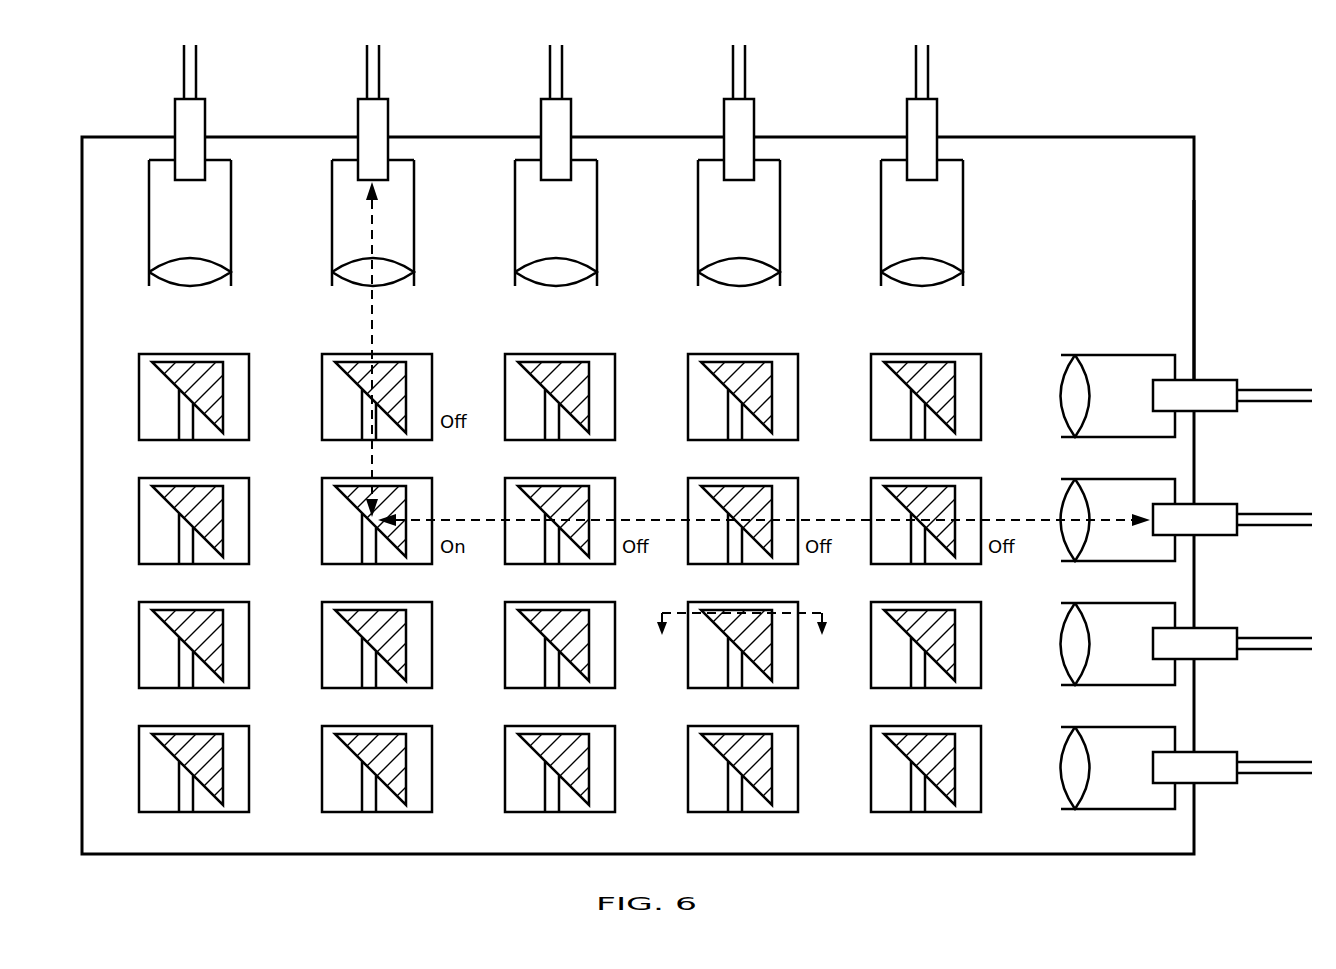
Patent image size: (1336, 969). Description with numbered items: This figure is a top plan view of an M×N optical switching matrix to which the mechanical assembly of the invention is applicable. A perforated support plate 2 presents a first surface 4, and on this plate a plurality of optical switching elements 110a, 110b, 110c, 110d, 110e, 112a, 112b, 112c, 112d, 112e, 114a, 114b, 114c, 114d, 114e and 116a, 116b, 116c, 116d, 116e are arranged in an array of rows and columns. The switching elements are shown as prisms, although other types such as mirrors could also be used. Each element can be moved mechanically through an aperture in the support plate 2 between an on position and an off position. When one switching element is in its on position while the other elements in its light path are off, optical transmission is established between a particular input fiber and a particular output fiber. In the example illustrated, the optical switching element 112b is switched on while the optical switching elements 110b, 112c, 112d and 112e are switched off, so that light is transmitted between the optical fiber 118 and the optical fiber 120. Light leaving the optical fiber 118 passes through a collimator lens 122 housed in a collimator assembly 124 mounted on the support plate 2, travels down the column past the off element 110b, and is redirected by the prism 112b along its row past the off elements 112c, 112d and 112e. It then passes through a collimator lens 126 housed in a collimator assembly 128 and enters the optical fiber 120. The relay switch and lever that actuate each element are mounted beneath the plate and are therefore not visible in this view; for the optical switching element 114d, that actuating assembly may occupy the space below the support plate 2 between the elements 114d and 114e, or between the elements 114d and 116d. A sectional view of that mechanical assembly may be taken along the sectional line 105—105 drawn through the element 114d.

The perforated support plate 2 is at (1092, 150).
The first surface 4 is at (1172, 238).
The optical fiber 118 is at (375, 66).
The collimator assembly 124 is at (398, 211).
The collimator lens 122 is at (388, 278).
The optical switching element 110a is at (192, 368).
The optical switching element 110b is at (394, 368).
The optical switching element 110c is at (558, 368).
The optical switching element 110d is at (741, 368).
The optical switching element 110e is at (924, 368).
The optical switching element 112a is at (192, 492).
The optical switching element 112b is at (394, 492).
The optical switching element 112c is at (558, 492).
The optical switching element 112d is at (741, 492).
The optical switching element 112e is at (924, 492).
The optical switching element 114a is at (192, 616).
The optical switching element 114b is at (375, 616).
The optical switching element 114c is at (558, 616).
The optical switching element 114d is at (763, 648).
The optical switching element 114e is at (924, 616).
The optical switching element 116a is at (192, 740).
The optical switching element 116b is at (375, 740).
The optical switching element 116c is at (558, 740).
The optical switching element 116d is at (741, 740).
The optical switching element 116e is at (924, 740).
The collimator lens 126 is at (1075, 502).
The collimator assembly 128 is at (1118, 495).
The optical fiber 120 is at (1263, 516).
The sectional line 105 is at (742, 639).